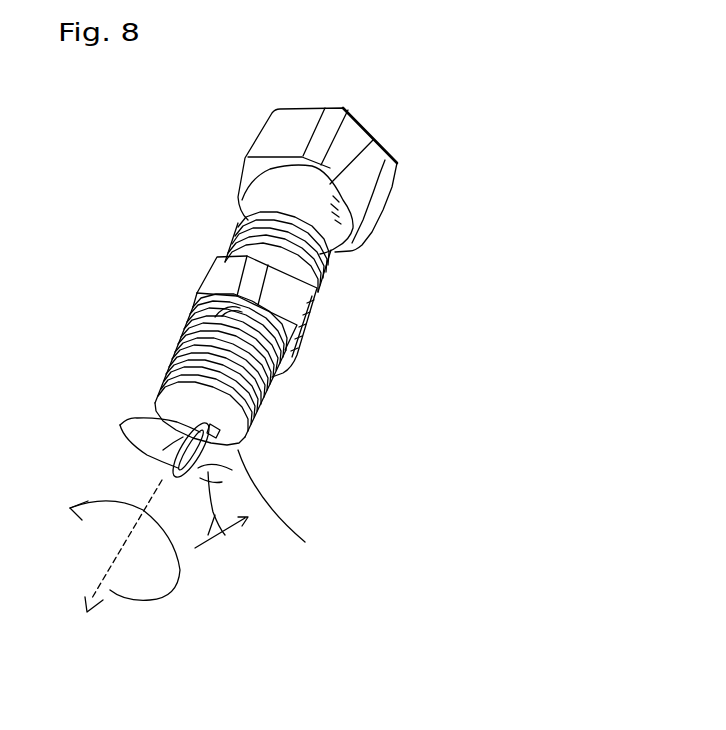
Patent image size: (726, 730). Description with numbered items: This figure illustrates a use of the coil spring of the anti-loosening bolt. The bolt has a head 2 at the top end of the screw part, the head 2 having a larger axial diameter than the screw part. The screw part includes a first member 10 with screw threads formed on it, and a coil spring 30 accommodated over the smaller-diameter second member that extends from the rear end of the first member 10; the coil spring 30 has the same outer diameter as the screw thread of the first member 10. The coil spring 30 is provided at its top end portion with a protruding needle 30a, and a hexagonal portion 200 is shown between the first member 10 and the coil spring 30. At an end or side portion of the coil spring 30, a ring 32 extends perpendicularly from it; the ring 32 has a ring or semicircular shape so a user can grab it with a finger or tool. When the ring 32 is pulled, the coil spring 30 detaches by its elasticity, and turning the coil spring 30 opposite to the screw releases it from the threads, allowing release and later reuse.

The head 2 is at (353, 158).
The first member 10 is at (240, 223).
The hexagonal portion 200 is at (313, 305).
The coil spring 30 is at (183, 340).
The protruding needle 30a is at (196, 296).
The ring 32 is at (205, 438).